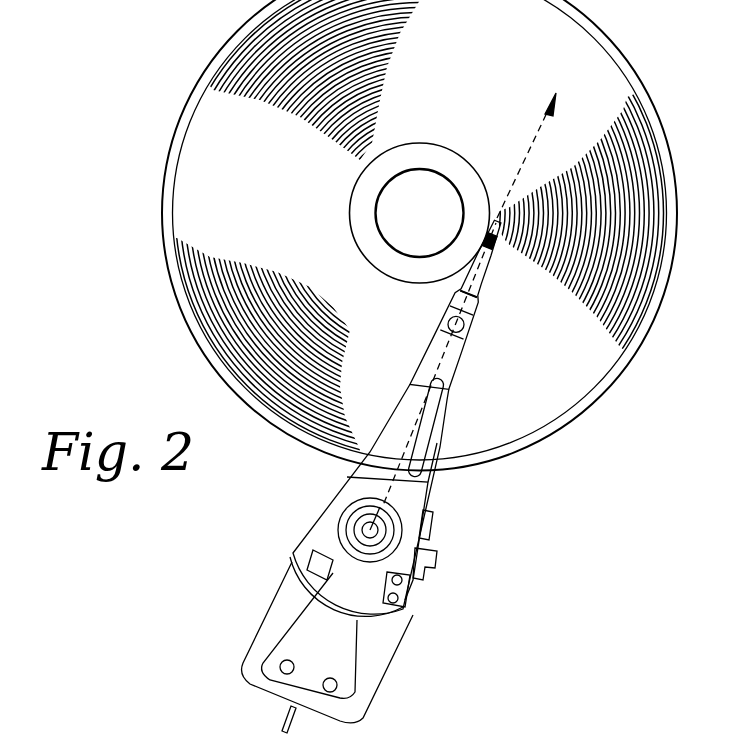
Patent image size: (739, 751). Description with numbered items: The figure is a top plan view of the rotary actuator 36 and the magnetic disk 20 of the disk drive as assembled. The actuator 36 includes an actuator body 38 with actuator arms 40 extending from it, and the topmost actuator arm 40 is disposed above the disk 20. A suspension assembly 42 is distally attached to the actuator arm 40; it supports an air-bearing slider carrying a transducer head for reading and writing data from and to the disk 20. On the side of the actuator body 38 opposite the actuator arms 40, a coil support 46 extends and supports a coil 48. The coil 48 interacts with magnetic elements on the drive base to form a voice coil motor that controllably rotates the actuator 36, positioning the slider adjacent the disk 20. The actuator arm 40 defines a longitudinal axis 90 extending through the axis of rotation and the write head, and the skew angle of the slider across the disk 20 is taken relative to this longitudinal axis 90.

The magnetic disk 20 is at (553, 395).
The rotary actuator 36 is at (317, 523).
The actuator body 38 is at (305, 553).
The actuator arm 40 is at (440, 443).
The suspension assembly 42 is at (482, 295).
The coil support 46 is at (263, 637).
The coil 48 is at (263, 665).
The longitudinal axis 90 is at (540, 133).